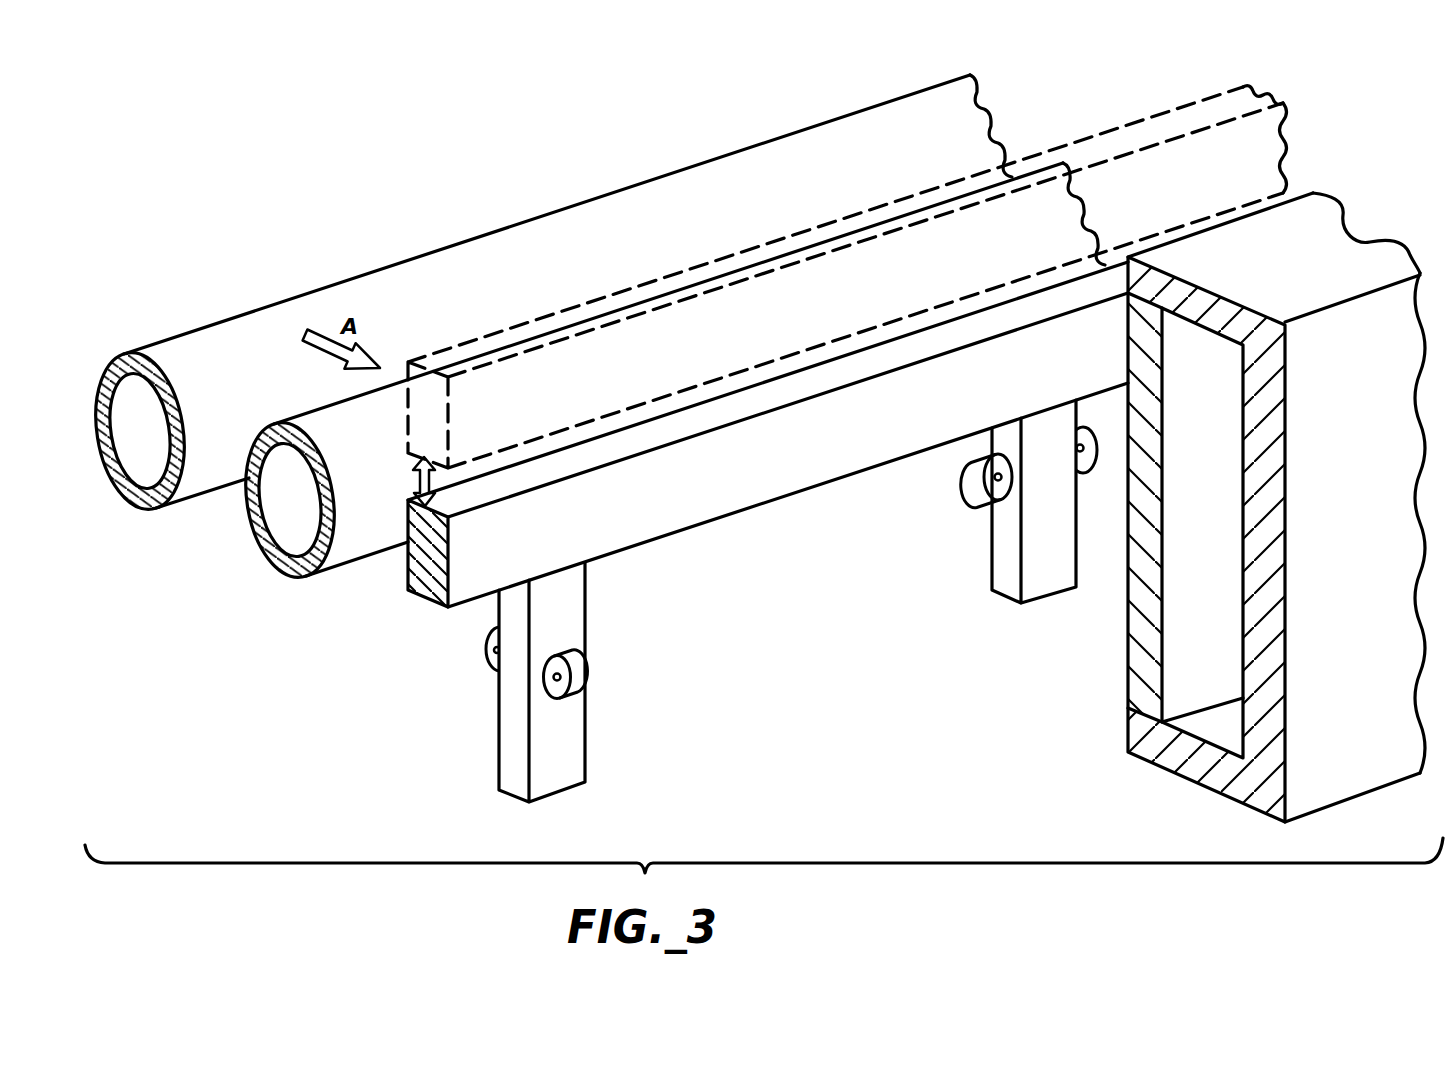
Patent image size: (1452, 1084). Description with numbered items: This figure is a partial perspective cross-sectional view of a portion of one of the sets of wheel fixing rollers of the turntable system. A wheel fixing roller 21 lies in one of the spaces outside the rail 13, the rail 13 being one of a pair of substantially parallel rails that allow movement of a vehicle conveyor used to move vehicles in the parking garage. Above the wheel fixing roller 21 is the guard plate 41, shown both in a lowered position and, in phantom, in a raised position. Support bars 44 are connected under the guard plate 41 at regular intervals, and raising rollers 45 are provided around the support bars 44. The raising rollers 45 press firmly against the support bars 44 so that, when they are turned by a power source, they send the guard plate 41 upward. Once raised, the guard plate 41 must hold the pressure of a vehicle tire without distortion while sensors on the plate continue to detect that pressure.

The rail 13 is at (1178, 768).
The wheel fixing roller 21 is at (684, 160).
The guard plate 41 is at (1165, 112).
The support bar 44 is at (566, 778).
The raising roller 45 is at (588, 676).